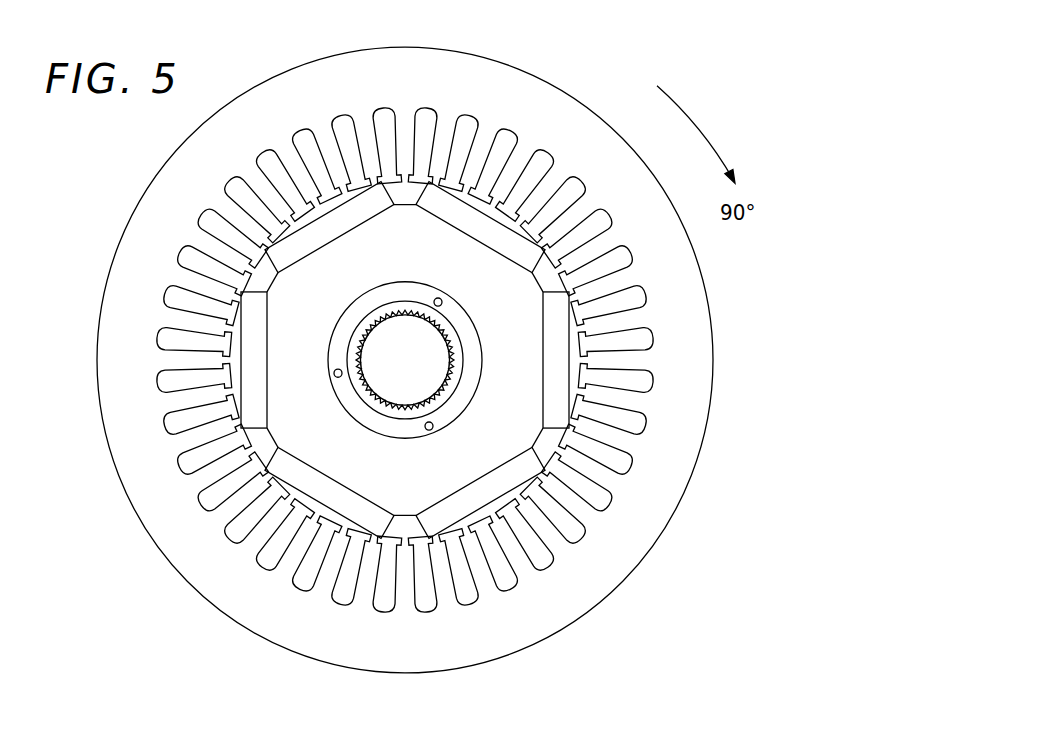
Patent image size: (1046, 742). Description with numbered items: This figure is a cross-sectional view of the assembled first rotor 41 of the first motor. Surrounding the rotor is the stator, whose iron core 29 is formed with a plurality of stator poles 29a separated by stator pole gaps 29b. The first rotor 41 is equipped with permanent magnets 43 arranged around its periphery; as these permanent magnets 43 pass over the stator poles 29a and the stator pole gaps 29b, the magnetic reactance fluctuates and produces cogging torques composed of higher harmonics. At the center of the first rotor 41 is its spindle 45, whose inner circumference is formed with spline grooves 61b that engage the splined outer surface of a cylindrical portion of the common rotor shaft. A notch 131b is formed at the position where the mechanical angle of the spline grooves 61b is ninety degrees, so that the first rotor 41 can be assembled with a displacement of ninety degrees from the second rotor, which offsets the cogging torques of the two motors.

The iron core 29 is at (326, 86).
The stator poles 29a is at (617, 400).
The stator pole gaps 29b is at (568, 462).
The permanent magnets 43 is at (438, 200).
The spindle 45 is at (455, 322).
The notch 131b is at (566, 336).
The spline grooves 61b is at (358, 358).
The first rotor 41 is at (512, 432).